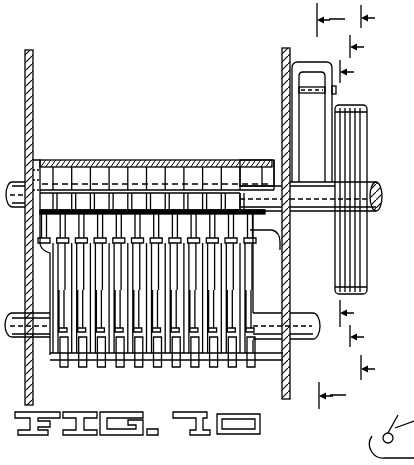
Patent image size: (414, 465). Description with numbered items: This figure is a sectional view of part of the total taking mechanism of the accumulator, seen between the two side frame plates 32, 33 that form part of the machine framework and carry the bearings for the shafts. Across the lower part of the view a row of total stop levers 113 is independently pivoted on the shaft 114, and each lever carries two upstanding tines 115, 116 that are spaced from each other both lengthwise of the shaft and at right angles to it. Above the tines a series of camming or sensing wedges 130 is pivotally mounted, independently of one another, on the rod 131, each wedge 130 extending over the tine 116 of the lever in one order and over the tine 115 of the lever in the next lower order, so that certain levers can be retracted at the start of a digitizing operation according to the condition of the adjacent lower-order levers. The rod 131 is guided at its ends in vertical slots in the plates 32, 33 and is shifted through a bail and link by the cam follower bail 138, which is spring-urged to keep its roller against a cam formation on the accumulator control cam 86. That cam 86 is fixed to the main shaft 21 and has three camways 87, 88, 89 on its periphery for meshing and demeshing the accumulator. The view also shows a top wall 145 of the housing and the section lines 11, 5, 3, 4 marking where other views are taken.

The side frame plate 32 is at (33, 398).
The side frame plate 33 is at (283, 387).
The tubular housing top wall 145 is at (90, 161).
The sensing wedge 130 is at (135, 178).
The tine 115 is at (190, 190).
The tine 116 is at (210, 190).
The rod 131 is at (265, 174).
The total stop lever 113 is at (110, 365).
The shaft 114 is at (305, 339).
The main shaft 21 is at (372, 185).
The cam follower bail 138 is at (298, 62).
The accumulator control cam 86 is at (365, 264).
The camway 87 is at (338, 128).
The camway 88 is at (349, 135).
The camway 89 is at (359, 152).
The section line 11- 11 is at (335, 208).
The section line 5- 5 is at (377, 193).
The section line 3- 3 is at (366, 192).
The section line 4- 4 is at (356, 193).